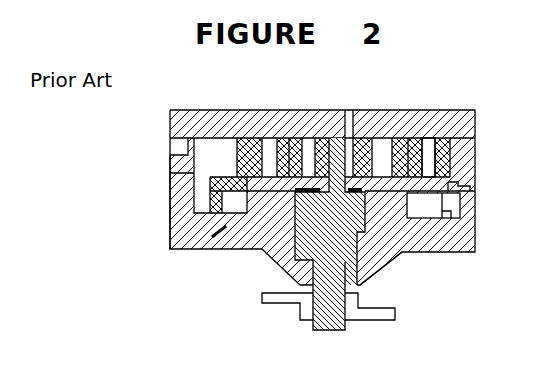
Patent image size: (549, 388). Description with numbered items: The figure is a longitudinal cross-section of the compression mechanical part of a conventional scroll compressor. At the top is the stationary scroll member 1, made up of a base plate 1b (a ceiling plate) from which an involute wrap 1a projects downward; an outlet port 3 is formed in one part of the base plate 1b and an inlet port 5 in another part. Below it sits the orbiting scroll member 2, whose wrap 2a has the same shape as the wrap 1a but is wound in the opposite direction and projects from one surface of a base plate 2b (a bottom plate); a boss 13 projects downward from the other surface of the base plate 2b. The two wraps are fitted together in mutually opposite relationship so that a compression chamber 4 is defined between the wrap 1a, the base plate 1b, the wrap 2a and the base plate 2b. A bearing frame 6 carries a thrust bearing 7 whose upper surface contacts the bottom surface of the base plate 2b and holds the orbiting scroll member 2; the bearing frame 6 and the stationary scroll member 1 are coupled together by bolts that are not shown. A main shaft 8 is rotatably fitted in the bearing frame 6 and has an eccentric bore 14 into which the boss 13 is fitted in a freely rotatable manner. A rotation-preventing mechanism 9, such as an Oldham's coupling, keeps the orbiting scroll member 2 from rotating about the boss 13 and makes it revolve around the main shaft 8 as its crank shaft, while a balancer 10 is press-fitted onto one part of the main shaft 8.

The stationary scroll member 1 is at (405, 105).
The wrap 1a is at (212, 249).
The base plate 1b is at (452, 113).
The orbiting scroll member 2 is at (458, 184).
The wrap 2a is at (250, 177).
The base plate 2b is at (220, 177).
The outlet port 3 is at (349, 128).
The compression chamber 4 is at (423, 157).
The inlet port 5 is at (170, 147).
The bearing frame 6 is at (180, 212).
The thrust bearing 7 is at (455, 205).
The main shaft 8 is at (325, 314).
The rotation-preventing mechanism 9 is at (450, 215).
The balancer 10 is at (268, 295).
The boss 13 is at (372, 236).
The eccentric bore 14 is at (296, 242).